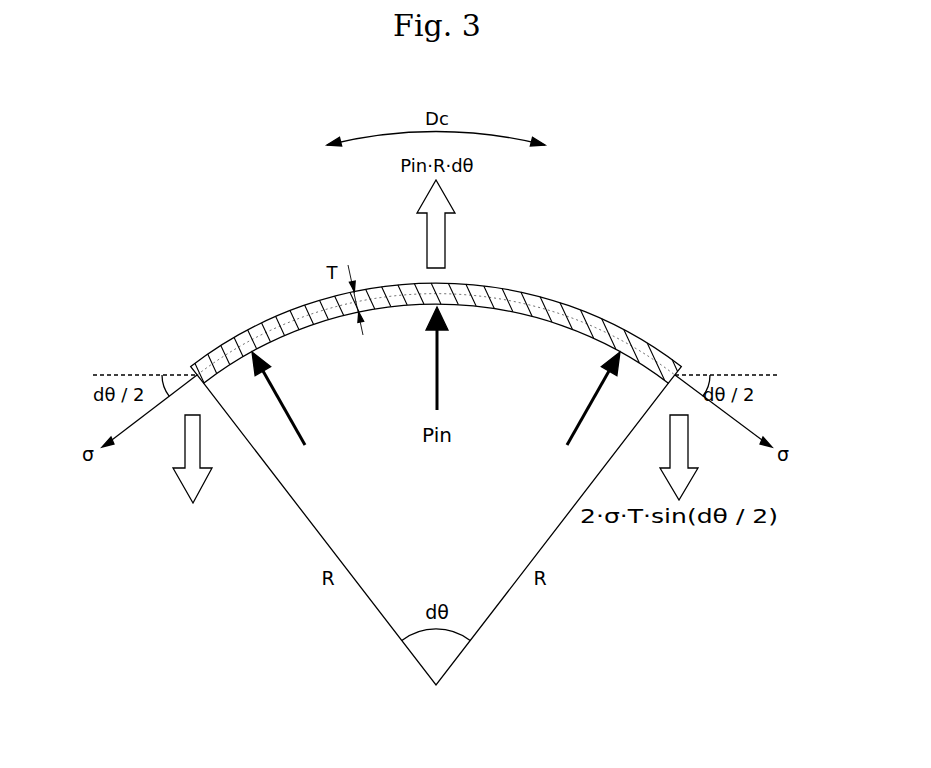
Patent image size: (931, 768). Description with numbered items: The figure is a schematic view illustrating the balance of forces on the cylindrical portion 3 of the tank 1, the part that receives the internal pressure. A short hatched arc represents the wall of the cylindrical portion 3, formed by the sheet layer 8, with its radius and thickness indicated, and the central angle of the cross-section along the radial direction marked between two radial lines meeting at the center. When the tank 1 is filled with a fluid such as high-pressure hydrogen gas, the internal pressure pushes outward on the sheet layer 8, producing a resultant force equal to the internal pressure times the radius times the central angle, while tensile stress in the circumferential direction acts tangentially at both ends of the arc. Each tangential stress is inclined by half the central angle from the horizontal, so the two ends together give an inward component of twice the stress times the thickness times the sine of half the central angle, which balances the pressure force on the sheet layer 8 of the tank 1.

The tank 1 is at (680, 192).
The cylindrical portion 3 is at (531, 293).
The sheet layer 8 is at (603, 316).